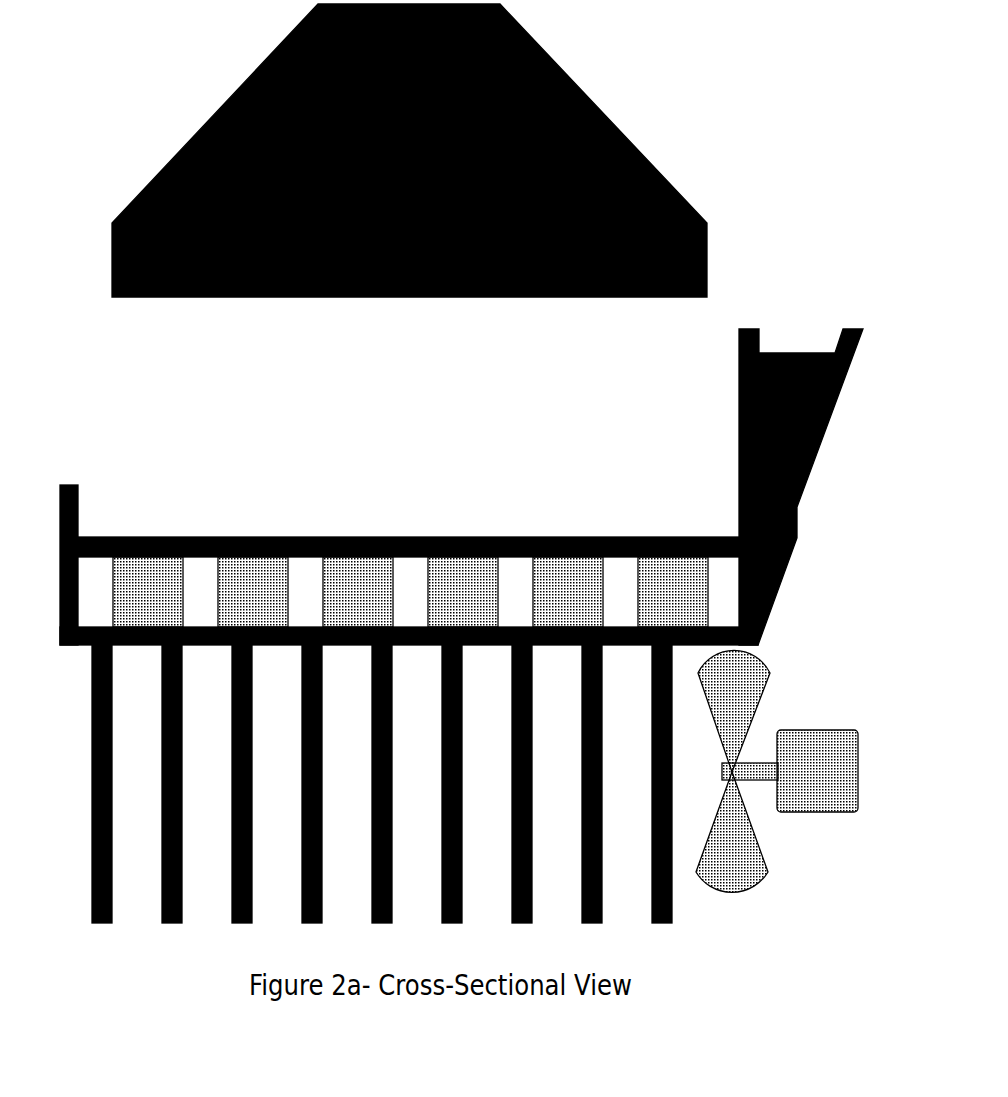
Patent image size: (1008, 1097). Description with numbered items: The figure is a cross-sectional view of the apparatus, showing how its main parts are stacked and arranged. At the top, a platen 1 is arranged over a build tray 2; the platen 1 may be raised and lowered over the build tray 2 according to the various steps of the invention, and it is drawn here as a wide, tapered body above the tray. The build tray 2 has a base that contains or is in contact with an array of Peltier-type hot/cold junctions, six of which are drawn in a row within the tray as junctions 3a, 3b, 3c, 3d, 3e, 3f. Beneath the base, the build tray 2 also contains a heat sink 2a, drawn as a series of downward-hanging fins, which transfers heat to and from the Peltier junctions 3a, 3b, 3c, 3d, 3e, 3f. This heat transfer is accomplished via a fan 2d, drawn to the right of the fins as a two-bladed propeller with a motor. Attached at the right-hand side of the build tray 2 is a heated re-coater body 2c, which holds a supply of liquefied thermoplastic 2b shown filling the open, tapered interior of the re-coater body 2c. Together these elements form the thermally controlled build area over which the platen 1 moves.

The platen 1 is at (590, 82).
The build tray 2 is at (70, 483).
The heat sink 2a is at (78, 810).
The liquefied thermoplastic 2b is at (801, 350).
The heated re-coater body 2c is at (861, 313).
The fan 2d is at (784, 707).
The Peltier-type hot/cold junction 3a is at (148, 592).
The Peltier-type hot/cold junction 3b is at (253, 592).
The Peltier-type hot/cold junction 3c is at (358, 592).
The Peltier-type hot/cold junction 3d is at (463, 592).
The Peltier-type hot/cold junction 3e is at (568, 592).
The Peltier-type hot/cold junction 3f is at (673, 592).